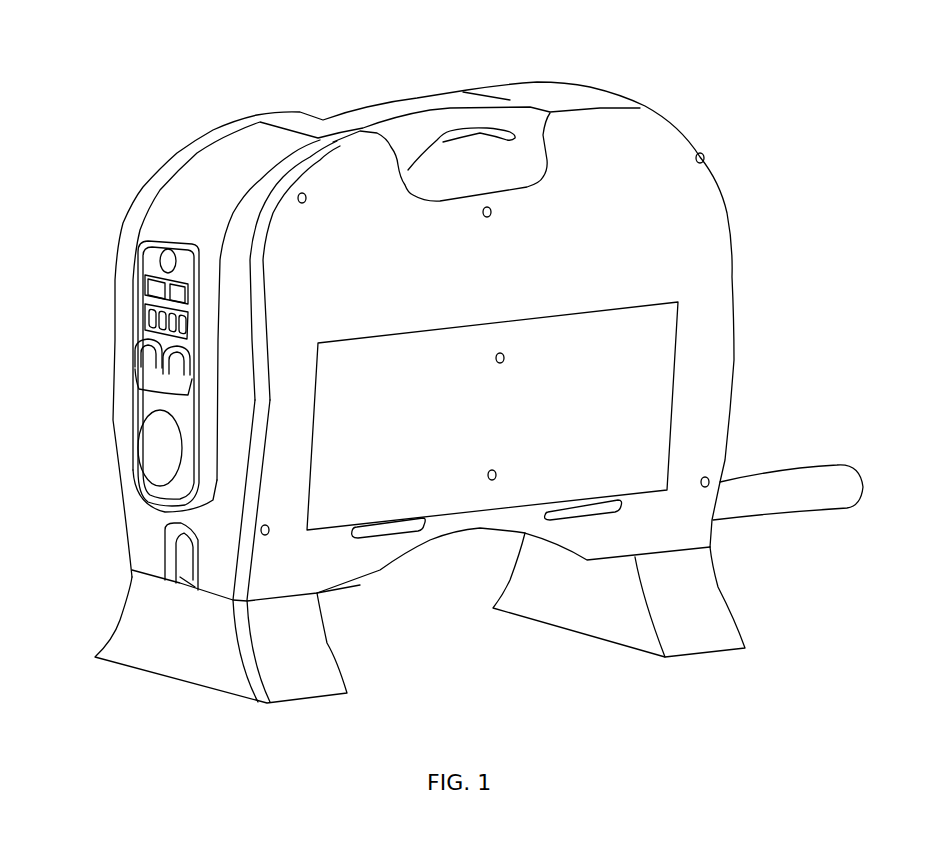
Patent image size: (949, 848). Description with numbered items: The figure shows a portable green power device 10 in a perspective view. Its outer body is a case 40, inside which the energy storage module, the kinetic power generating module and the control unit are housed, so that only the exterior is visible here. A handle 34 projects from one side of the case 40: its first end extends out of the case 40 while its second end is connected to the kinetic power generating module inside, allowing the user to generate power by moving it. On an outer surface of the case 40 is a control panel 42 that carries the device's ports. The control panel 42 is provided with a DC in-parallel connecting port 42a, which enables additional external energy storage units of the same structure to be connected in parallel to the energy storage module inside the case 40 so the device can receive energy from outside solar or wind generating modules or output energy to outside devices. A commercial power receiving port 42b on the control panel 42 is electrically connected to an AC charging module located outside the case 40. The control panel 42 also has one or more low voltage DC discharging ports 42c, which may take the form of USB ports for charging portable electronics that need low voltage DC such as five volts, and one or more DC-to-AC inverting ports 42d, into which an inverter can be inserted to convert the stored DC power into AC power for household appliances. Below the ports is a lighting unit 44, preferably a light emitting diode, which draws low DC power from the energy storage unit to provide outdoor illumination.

The portable green power device 10 is at (797, 107).
The handle 34 is at (810, 487).
The case 40 is at (653, 228).
The control panel 42 is at (178, 238).
The DC in-parallel connecting port 42a is at (147, 312).
The commercial power receiving port 42b is at (168, 250).
The low voltage DC discharging port 42c is at (145, 280).
The DC-to-AC inverting port 42d is at (135, 357).
The lighting unit 44 is at (155, 443).